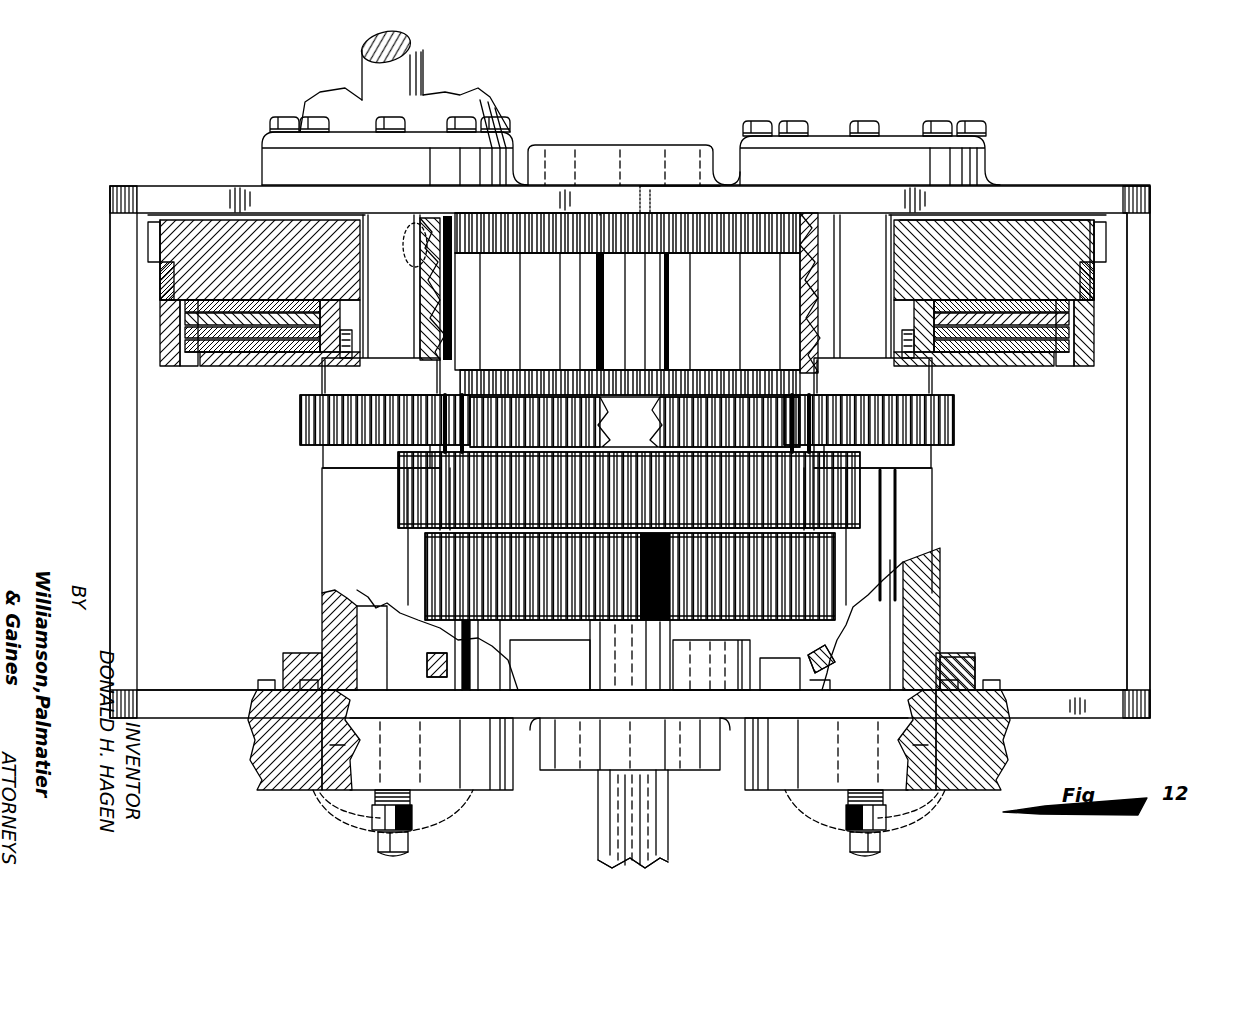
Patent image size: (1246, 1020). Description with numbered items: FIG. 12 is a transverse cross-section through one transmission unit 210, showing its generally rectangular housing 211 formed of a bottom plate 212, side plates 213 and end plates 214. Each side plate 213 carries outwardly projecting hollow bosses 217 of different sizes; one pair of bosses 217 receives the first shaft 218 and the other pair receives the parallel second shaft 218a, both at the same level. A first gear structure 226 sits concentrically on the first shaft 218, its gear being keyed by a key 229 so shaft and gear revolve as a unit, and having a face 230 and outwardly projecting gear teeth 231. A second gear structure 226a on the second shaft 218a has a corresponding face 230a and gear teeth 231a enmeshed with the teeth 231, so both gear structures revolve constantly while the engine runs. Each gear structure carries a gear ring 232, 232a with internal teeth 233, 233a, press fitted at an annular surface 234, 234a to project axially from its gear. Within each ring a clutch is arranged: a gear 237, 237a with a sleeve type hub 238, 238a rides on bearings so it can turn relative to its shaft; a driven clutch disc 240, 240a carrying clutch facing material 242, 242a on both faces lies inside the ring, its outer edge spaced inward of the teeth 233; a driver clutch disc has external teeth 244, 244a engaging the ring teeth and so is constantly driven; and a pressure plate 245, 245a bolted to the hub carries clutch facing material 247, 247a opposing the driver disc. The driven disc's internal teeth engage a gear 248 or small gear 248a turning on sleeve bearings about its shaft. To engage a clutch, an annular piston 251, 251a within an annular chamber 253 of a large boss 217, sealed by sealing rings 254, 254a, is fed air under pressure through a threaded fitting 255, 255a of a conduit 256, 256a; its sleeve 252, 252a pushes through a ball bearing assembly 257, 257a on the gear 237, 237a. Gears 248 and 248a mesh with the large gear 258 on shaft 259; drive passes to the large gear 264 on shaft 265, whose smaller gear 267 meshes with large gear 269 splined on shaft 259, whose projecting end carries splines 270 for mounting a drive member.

The transmission unit 210 is at (666, 90).
The housing 211 is at (1158, 190).
The bottom plate 212 is at (1075, 564).
The side plate 213 is at (1093, 186).
The end plate 214 is at (110, 480).
The boss 217 is at (262, 160).
The first shaft 218 is at (424, 53).
The second shaft 218a is at (896, 232).
The first gear structure 226 is at (214, 208).
The second gear structure 226a is at (1050, 212).
The key 229 is at (440, 262).
The face 230 is at (185, 303).
The face 230a is at (1080, 290).
The gear teeth 231 is at (148, 238).
The gear teeth 231a is at (1110, 230).
The gear ring 232 is at (200, 362).
The gear ring 232a is at (1070, 352).
The internal teeth 233 is at (176, 366).
The internal teeth 233a is at (1082, 366).
The annular surface 234 is at (165, 276).
The annular surface 234a is at (1095, 265).
The gear 237 is at (300, 426).
The gear 237a is at (954, 418).
The sleeve type hub 238 is at (405, 388).
The sleeve type hub 238a is at (870, 387).
The driven clutch disc 240 is at (185, 318).
The driven clutch disc 240a is at (1070, 305).
The clutch facing material 242 is at (256, 306).
The clutch facing material 242a is at (1002, 303).
The external teeth 244 is at (185, 332).
The external teeth 244a is at (1075, 320).
The pressure plate 245 is at (228, 366).
The pressure plate 245a is at (1024, 366).
The clutch facing material 247 is at (185, 346).
The clutch facing material 247a is at (1080, 335).
The gear 248 is at (345, 340).
The small gear 248a is at (952, 366).
The piston 251 is at (292, 655).
The piston 251a is at (960, 660).
The sleeve 252 is at (322, 553).
The sleeve 252a is at (935, 507).
The annular chamber 253 is at (330, 745).
The sealing ring 254 is at (252, 710).
The ring 254a is at (992, 695).
The threaded fitting 255 is at (372, 820).
The threaded fitting 255a is at (889, 820).
The conduit 256 is at (406, 850).
The conduit 256a is at (882, 852).
The ball bearing assembly 257 is at (323, 456).
The ball bearing assembly 257a is at (931, 456).
The large gear 258 is at (722, 372).
The shaft 259 is at (672, 208).
The large gear 264 is at (410, 532).
The shaft 265 is at (645, 687).
The smaller gear 267 is at (698, 622).
The large gear 269 is at (500, 624).
The splines 270 is at (668, 830).